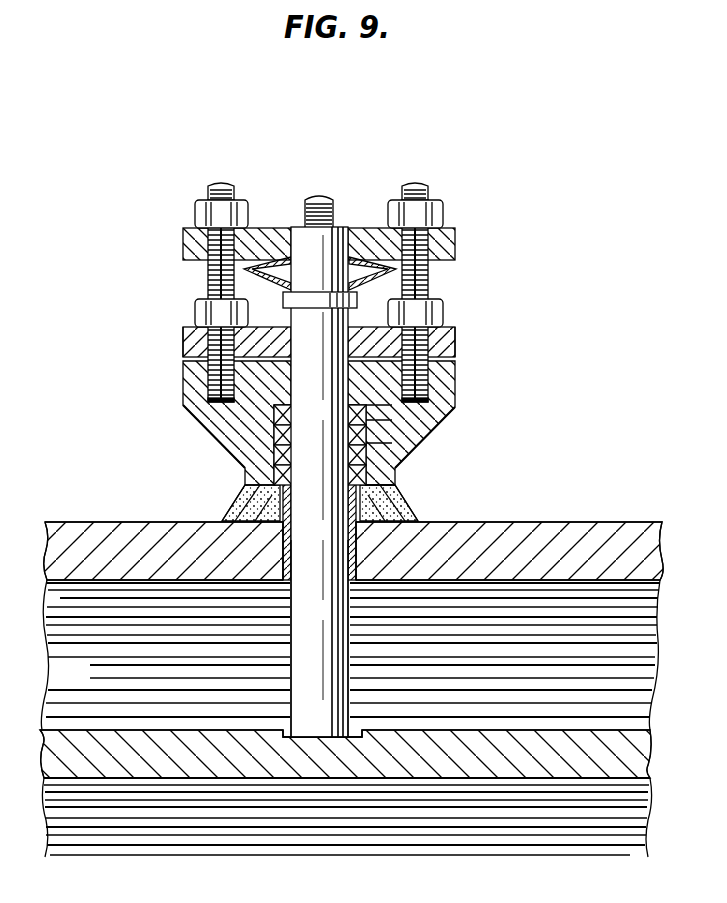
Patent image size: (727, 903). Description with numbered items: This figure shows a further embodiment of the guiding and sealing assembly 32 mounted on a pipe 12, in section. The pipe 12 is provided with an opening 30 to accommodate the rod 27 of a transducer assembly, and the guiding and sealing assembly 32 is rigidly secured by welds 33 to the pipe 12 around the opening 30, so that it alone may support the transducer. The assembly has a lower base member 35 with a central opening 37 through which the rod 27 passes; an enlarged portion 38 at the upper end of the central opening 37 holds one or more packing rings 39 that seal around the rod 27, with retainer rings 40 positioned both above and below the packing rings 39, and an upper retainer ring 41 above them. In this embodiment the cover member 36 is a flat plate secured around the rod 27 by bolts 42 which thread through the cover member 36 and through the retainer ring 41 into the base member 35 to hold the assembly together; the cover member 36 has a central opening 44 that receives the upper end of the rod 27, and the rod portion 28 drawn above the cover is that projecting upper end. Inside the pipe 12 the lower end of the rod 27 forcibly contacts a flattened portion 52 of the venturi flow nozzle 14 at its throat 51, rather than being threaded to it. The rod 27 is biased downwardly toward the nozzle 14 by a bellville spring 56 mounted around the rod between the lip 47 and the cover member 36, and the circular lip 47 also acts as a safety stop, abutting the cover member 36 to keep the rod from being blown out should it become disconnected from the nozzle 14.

The pipe 12 is at (513, 532).
The venturi flow nozzle 14 is at (515, 740).
The rod 27 is at (327, 642).
The bolt 28 is at (333, 202).
The opening 30 is at (377, 576).
The guiding and sealing assembly 32 is at (458, 326).
The welds 33 is at (242, 510).
The base member 35 is at (446, 418).
The cover member 36 is at (445, 248).
The central opening 37 is at (280, 490).
The enlarged portion 38 is at (270, 407).
The packing rings 39 is at (395, 467).
The retainer rings 40 is at (423, 443).
The retainer ring 41 is at (453, 345).
The bolts 42 is at (430, 275).
The central opening 44 is at (280, 227).
The lip 47 is at (352, 307).
The throat 51 is at (302, 782).
The flattened portion 52 is at (357, 726).
The bellville spring 56 is at (268, 291).